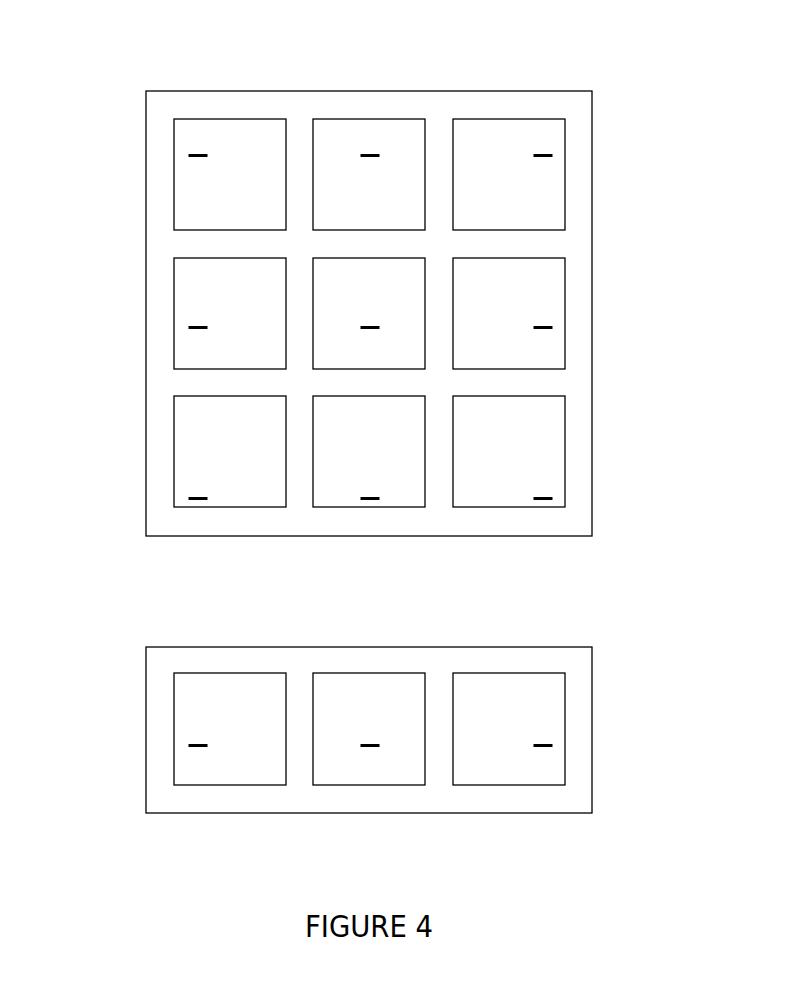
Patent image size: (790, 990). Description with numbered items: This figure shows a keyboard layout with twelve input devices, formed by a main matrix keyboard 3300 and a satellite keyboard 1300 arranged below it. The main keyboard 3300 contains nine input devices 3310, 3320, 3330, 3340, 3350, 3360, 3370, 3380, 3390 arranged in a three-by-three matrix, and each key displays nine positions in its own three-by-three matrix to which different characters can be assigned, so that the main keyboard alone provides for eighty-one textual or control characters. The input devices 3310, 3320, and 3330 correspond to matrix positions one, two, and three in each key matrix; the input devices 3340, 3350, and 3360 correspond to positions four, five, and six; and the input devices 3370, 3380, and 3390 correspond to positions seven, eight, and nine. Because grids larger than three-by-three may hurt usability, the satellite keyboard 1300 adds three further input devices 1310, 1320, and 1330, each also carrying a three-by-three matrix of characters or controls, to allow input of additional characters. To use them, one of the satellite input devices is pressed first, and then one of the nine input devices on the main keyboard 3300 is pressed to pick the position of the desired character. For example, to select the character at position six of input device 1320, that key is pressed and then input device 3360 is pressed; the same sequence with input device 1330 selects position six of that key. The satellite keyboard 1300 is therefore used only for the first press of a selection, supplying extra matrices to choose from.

The matrix keyboard 3300 is at (146, 91).
The input device 3310 is at (275, 118).
The input device 3320 is at (415, 118).
The input device 3330 is at (553, 118).
The input device 3340 is at (173, 312).
The input device 3350 is at (407, 257).
The input device 3360 is at (564, 313).
The input device 3370 is at (252, 508).
The input device 3380 is at (392, 508).
The input device 3390 is at (530, 508).
The satellite keyboard 1300 is at (147, 813).
The input device 1310 is at (265, 786).
The input device 1320 is at (405, 786).
The input device 1330 is at (543, 786).